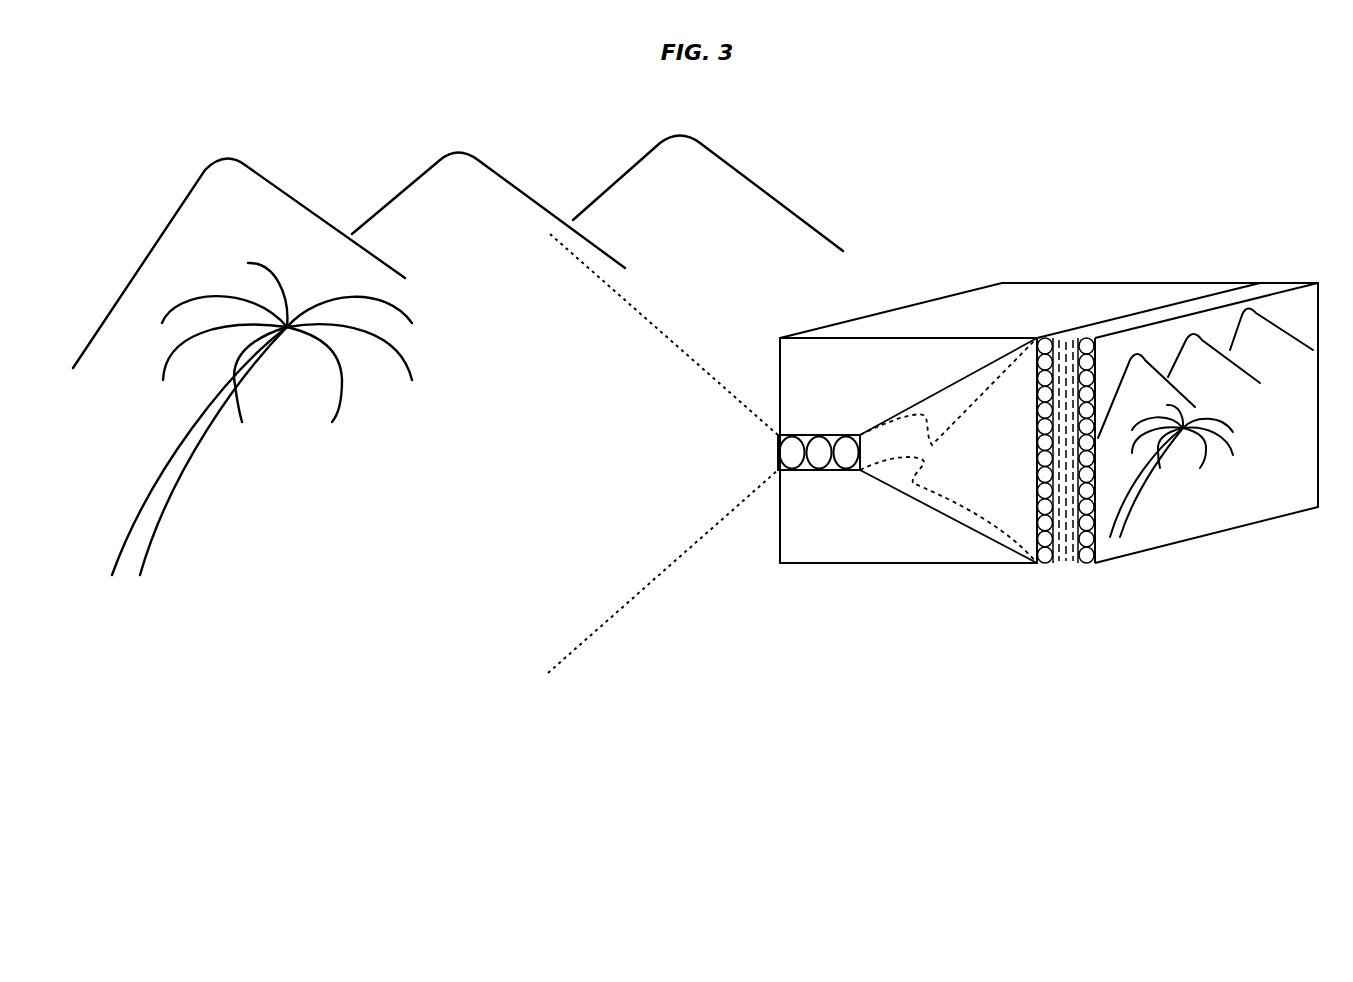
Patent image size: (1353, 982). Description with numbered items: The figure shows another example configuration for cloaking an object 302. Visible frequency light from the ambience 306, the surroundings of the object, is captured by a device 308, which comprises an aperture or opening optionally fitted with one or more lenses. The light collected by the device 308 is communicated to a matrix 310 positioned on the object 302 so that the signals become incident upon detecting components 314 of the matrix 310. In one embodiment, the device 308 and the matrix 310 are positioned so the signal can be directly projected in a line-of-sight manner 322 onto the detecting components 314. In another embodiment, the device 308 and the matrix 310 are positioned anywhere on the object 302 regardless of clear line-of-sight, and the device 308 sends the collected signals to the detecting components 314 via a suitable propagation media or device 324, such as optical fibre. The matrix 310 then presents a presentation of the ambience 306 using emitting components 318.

The object 302 is at (1049, 423).
The ambience 306 is at (288, 180).
The device 308 is at (818, 470).
The matrix 310 is at (1218, 300).
The detecting components 314 is at (1043, 567).
The emitting components 318 is at (1085, 567).
The line-of-sight projection 322 is at (945, 517).
The propagation media or device 324 is at (988, 512).